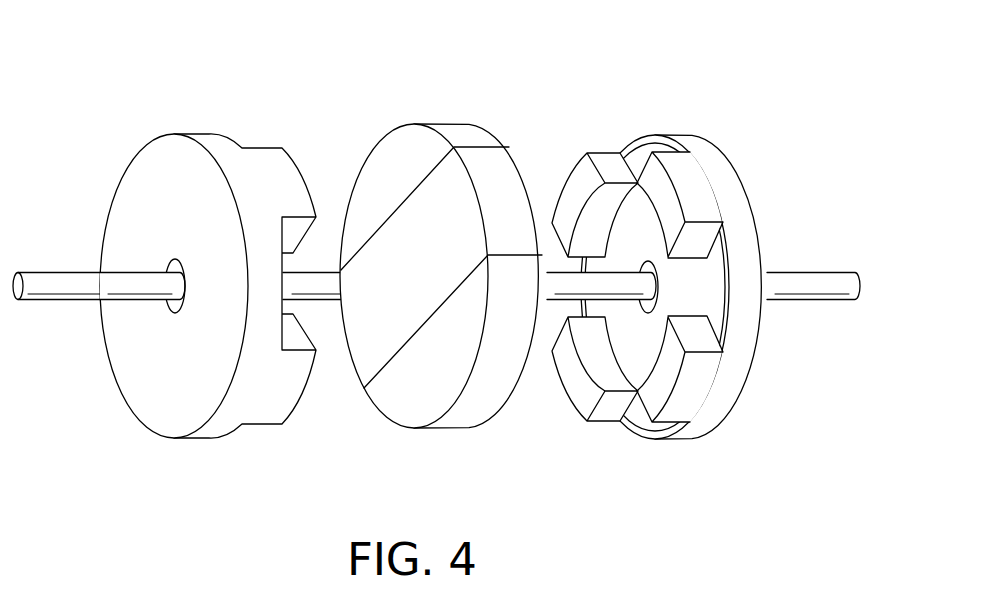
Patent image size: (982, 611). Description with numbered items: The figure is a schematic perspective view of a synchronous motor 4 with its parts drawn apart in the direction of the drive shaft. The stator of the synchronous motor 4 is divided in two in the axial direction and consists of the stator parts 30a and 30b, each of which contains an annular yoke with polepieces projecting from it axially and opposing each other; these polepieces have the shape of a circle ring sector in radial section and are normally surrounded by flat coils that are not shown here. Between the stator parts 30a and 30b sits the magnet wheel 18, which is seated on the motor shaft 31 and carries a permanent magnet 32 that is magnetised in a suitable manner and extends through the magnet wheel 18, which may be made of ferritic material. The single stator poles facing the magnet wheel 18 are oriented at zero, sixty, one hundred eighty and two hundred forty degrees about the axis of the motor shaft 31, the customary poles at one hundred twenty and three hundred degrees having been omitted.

The synchronous motor 4 is at (600, 63).
The magnet wheel 18 is at (377, 142).
The stator part 30a is at (213, 141).
The stator part 30b is at (678, 137).
The motor shaft 31 is at (803, 272).
The permanent magnet 32 is at (456, 162).